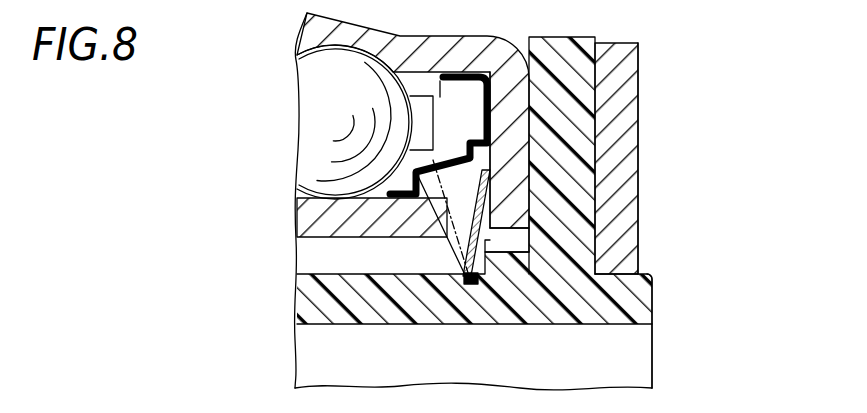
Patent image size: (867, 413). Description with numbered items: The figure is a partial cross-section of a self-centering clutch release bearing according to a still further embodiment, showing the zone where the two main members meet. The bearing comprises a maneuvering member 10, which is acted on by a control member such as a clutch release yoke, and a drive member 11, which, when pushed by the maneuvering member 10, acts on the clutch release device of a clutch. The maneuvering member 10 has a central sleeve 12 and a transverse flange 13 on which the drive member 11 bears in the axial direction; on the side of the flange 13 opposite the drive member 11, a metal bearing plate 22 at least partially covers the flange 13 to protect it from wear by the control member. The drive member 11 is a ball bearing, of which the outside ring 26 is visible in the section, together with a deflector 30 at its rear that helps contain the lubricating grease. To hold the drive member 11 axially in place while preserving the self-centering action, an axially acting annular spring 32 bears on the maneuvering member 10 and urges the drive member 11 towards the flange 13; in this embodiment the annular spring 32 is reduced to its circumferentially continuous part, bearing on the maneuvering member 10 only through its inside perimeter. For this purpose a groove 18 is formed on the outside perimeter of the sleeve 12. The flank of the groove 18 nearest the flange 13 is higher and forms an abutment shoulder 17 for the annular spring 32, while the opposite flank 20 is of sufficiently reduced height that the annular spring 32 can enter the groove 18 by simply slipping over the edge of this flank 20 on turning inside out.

The maneuvering member 10 is at (646, 200).
The drive member 11 is at (286, 113).
The central sleeve 12 is at (315, 302).
The transverse flange 13 is at (567, 55).
The abutment shoulder 17 is at (486, 229).
The groove 18 is at (484, 284).
The flank 20 is at (463, 272).
The bearing plate 22 is at (615, 62).
The outside ring 26 is at (408, 50).
The deflector 30 is at (483, 73).
The annular spring 32 is at (450, 134).